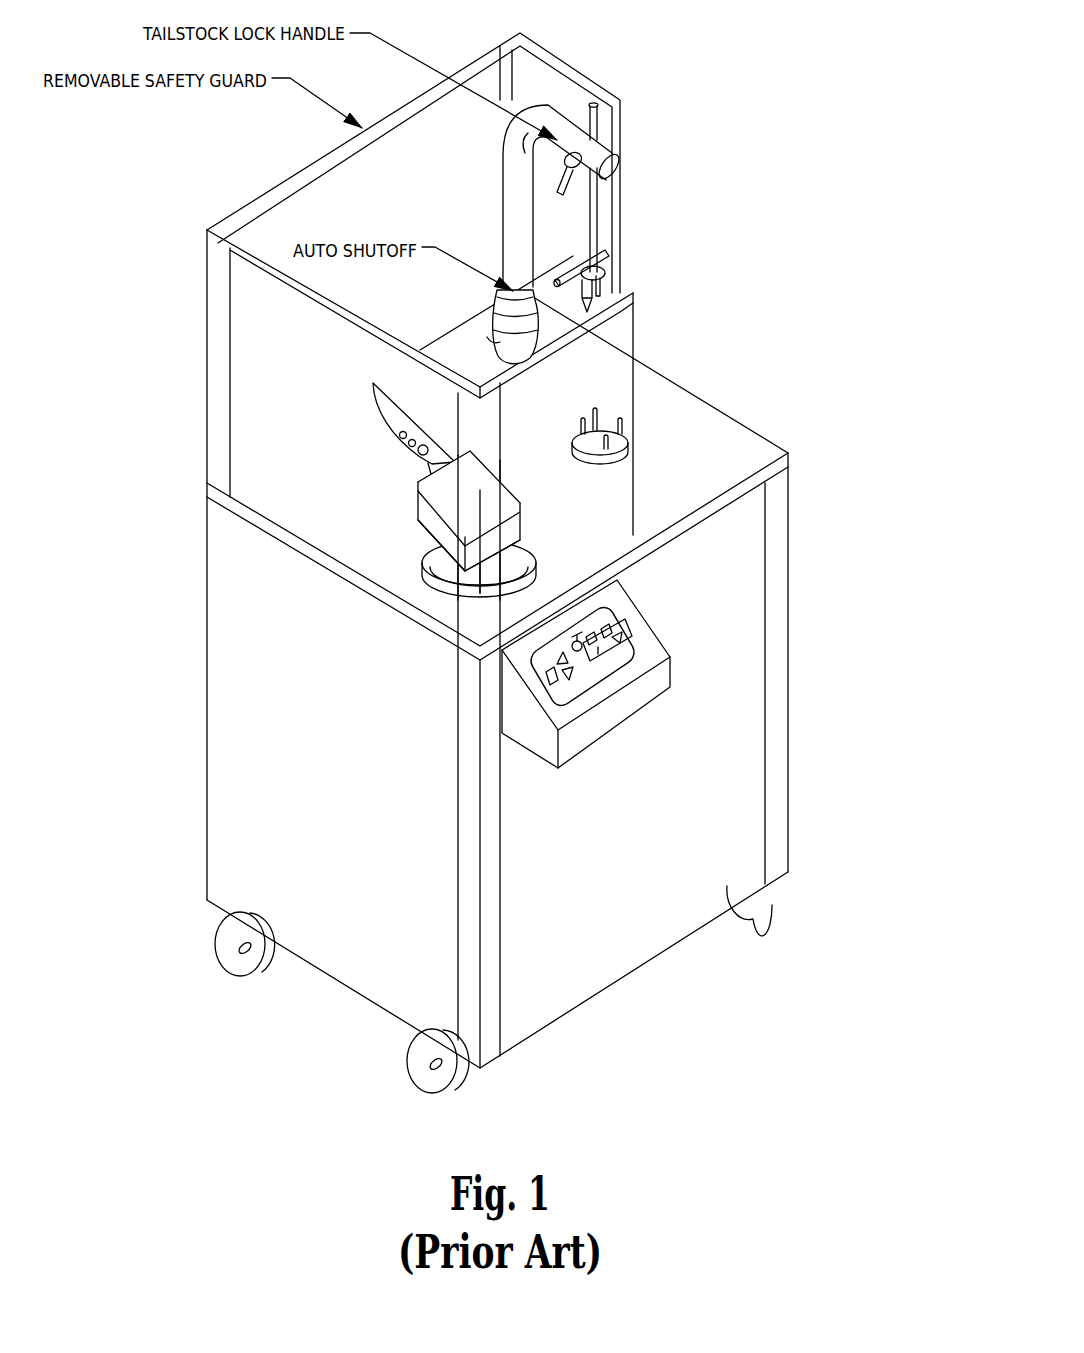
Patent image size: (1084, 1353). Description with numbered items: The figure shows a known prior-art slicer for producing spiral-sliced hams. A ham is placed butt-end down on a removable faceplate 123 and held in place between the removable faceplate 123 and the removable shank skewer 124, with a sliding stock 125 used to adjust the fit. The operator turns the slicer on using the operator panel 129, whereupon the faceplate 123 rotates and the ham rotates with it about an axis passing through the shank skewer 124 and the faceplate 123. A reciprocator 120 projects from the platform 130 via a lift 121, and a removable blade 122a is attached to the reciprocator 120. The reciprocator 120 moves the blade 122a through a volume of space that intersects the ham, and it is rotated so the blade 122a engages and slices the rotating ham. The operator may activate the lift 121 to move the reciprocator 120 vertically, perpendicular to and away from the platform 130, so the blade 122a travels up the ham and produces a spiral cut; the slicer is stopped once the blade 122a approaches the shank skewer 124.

The reciprocator 120 is at (440, 528).
The lift 121 is at (450, 570).
The removable blade 122a is at (372, 386).
The removable faceplate 123 is at (628, 440).
The removable shank skewer 124 is at (613, 260).
The sliding stock 125 is at (605, 120).
The operator panel 129 is at (653, 625).
The platform 130 is at (267, 478).